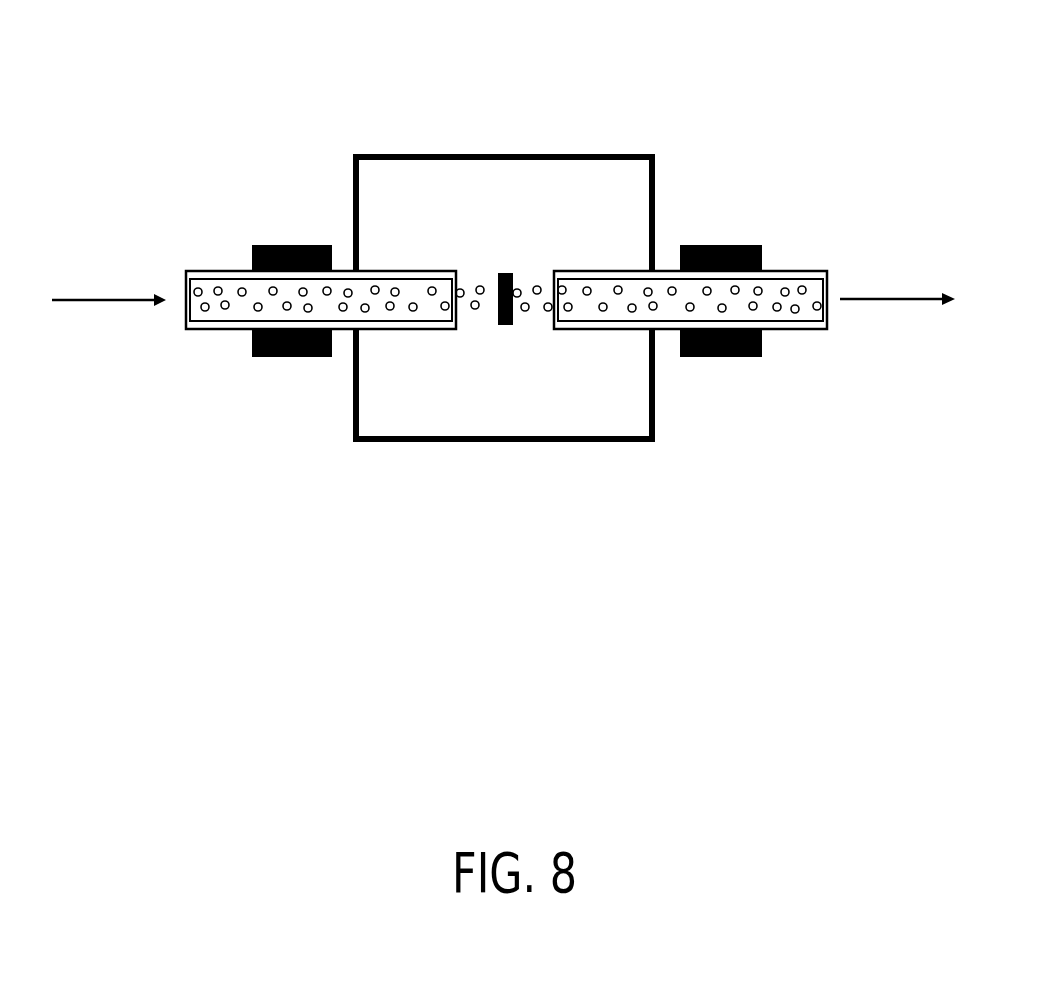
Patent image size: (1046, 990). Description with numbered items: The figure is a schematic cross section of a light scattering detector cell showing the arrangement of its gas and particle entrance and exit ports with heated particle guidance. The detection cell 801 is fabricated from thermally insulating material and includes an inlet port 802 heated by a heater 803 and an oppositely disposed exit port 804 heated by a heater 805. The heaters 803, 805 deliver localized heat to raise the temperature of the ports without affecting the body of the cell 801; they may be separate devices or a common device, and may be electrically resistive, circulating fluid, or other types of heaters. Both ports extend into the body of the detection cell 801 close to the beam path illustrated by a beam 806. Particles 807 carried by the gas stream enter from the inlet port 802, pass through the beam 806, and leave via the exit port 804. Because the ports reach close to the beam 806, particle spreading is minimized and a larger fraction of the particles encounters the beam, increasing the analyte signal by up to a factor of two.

The detection cell 801 is at (432, 153).
The inlet port 802 is at (220, 271).
The heater 803 is at (297, 357).
The exit port 804 is at (798, 272).
The heater 805 is at (720, 357).
The beam 806 is at (510, 325).
The particles 807 is at (478, 307).